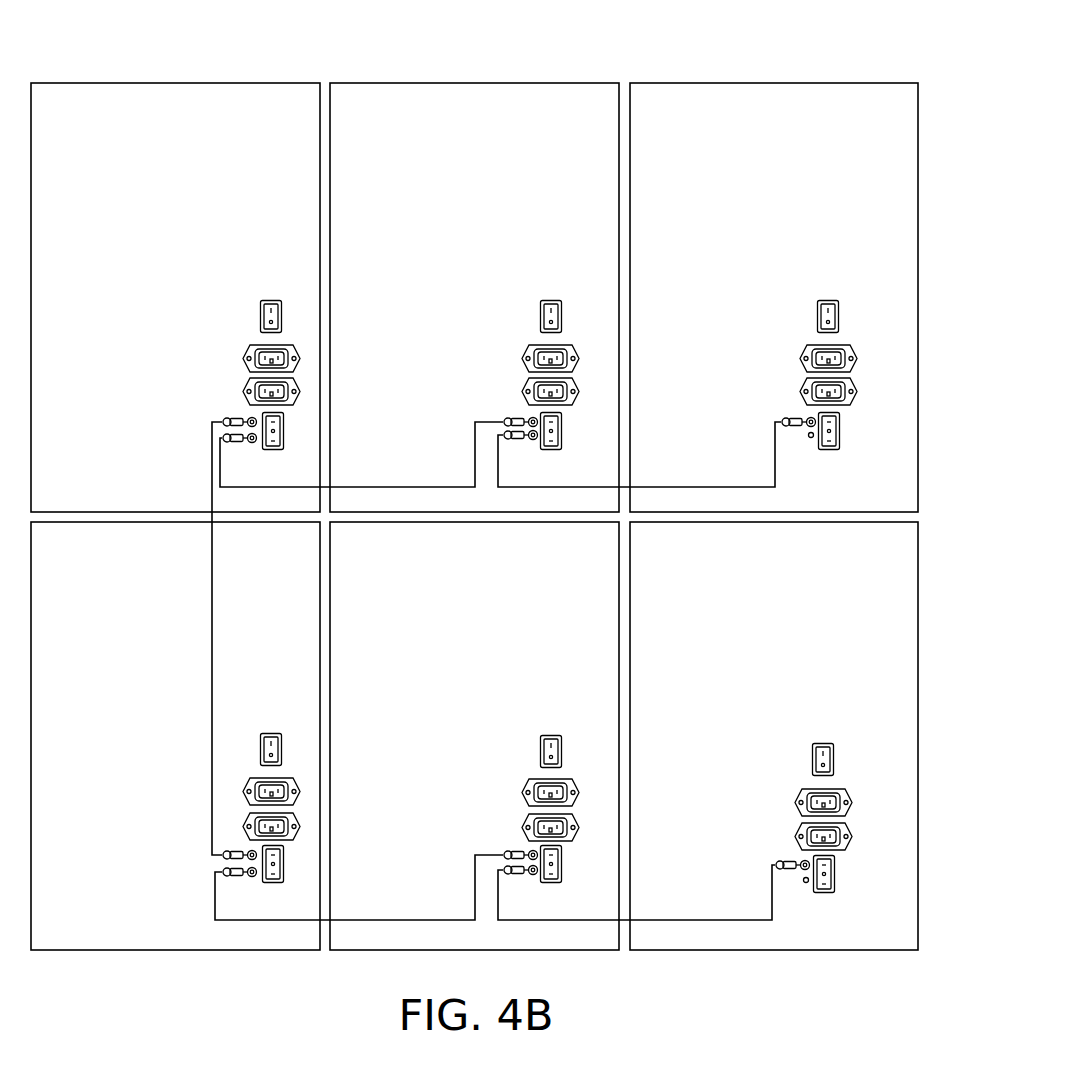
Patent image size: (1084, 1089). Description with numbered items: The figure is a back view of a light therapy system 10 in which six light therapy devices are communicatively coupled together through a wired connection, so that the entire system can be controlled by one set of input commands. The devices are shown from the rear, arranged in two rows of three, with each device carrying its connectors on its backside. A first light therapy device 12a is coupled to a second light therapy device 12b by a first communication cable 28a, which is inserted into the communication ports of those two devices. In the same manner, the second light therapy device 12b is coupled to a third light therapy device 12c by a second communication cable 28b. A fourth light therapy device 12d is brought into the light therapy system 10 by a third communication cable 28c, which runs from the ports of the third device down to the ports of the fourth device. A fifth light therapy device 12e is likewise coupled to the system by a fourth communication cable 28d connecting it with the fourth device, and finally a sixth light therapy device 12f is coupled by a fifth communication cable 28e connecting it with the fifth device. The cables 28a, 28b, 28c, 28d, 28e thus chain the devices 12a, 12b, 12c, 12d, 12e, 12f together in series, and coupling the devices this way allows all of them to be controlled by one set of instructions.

The light therapy system 10 is at (636, 50).
The first light therapy device 12a is at (774, 297).
The second light therapy device 12b is at (474, 297).
The third light therapy device 12c is at (175, 297).
The fourth light therapy device 12d is at (175, 736).
The fifth light therapy device 12e is at (474, 736).
The sixth light therapy device 12f is at (774, 736).
The first communication cable 28a is at (652, 367).
The second communication cable 28b is at (362, 384).
The third communication cable 28c is at (136, 568).
The fourth communication cable 28d is at (363, 806).
The fifth communication cable 28e is at (651, 806).